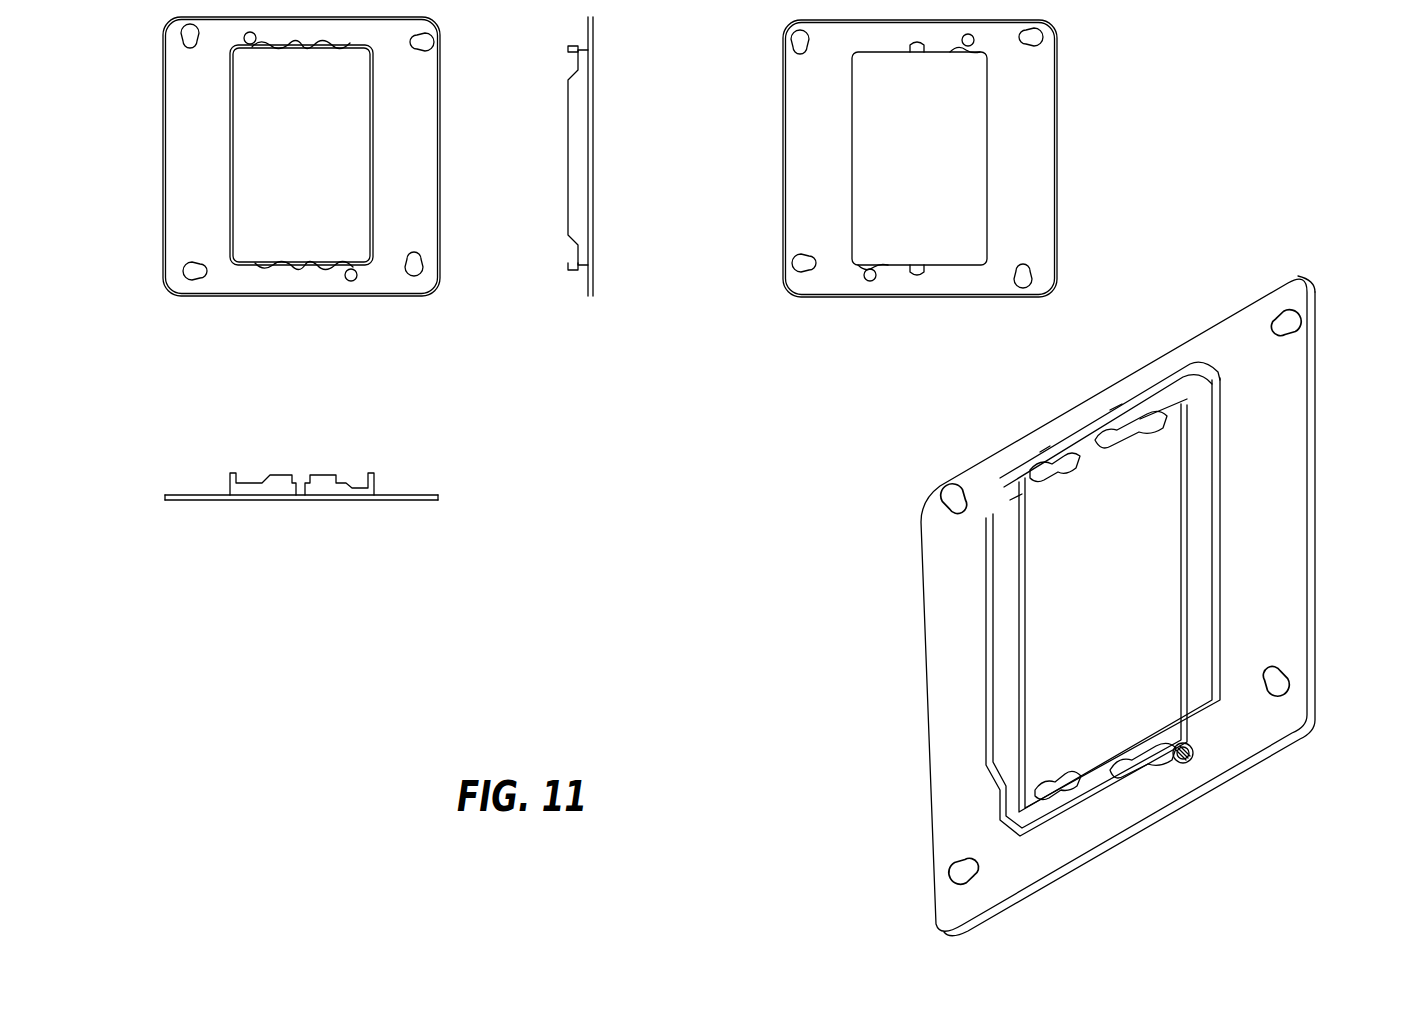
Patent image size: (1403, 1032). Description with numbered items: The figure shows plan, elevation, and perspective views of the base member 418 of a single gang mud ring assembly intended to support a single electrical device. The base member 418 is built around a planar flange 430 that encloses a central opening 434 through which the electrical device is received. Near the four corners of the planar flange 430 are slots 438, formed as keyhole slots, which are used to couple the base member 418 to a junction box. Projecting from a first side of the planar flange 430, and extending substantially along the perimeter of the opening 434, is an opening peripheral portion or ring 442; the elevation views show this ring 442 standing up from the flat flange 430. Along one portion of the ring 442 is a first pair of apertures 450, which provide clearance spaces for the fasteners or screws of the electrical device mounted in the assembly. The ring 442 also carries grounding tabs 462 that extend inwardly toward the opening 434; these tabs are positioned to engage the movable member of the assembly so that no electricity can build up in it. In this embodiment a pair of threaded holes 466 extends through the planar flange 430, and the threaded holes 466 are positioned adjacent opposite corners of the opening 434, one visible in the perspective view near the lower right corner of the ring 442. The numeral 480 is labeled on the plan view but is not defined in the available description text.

The base member 418 is at (1336, 262).
The planar flange 430 is at (594, 115).
The opening 434 is at (1046, 632).
The slots 438 is at (954, 490).
The opening peripheral portion or ring 442 is at (362, 169).
The first pair of apertures 450 is at (1118, 790).
The grounding tabs 462 is at (1105, 412).
The threaded holes 466 is at (1187, 768).
The plate assembly 480 is at (410, 176).